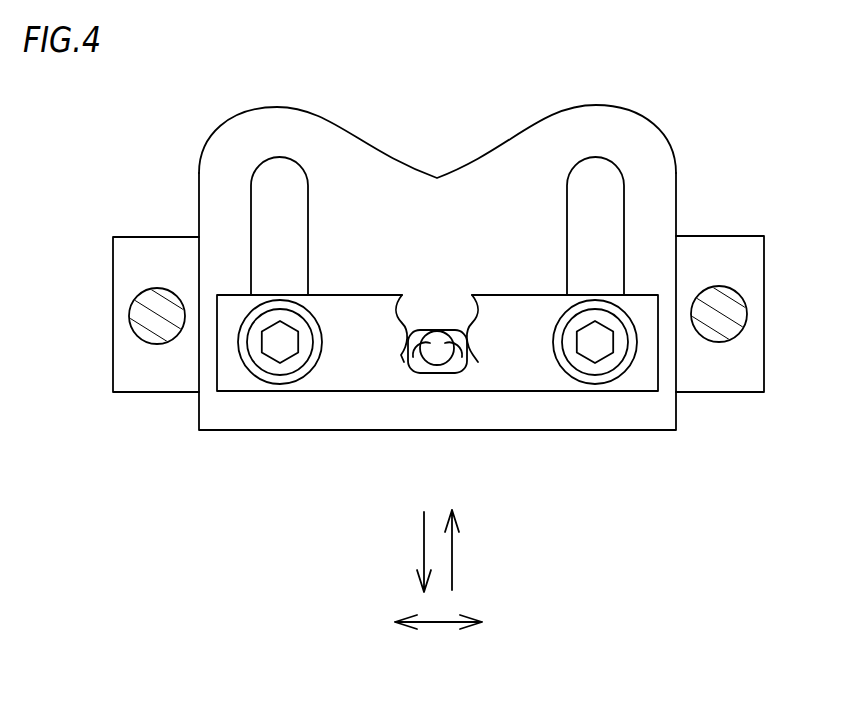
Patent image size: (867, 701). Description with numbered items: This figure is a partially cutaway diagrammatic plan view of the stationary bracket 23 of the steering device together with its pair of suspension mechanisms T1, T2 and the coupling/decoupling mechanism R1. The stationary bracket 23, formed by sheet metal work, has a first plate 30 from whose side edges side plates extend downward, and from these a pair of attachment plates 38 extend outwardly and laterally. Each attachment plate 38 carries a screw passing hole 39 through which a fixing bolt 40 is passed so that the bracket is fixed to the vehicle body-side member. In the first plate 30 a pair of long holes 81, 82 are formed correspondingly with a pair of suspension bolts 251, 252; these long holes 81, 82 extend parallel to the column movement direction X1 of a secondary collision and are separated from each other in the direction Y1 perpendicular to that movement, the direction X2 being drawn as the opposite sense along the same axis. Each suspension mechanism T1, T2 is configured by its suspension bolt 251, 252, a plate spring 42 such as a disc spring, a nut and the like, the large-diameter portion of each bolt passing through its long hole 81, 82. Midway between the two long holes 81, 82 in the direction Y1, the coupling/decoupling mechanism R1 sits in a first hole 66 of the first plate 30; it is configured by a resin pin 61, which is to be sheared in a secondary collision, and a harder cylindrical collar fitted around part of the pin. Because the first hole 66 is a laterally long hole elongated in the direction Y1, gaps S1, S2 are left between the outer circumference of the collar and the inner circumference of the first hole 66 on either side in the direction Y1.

The stationary bracket 23 is at (677, 206).
The first plate 30 is at (422, 190).
The long hole 81 is at (280, 172).
The long hole 82 is at (595, 172).
The attachment plate 38 is at (127, 267).
The screw passing hole 39 is at (131, 318).
The fixing bolt 40 is at (155, 330).
The plate spring 42 is at (253, 368).
The suspension bolt 251 is at (269, 377).
The suspension bolt 252 is at (605, 377).
The suspension mechanism T1 is at (307, 383).
The suspension mechanism T2 is at (568, 383).
The gap S1 is at (420, 330).
The gap S2 is at (455, 330).
The resin pin 61 is at (418, 352).
The coupling/decoupling mechanism R1 is at (436, 366).
The first hole 66 is at (445, 358).
The column movement direction X1 is at (452, 566).
The X2 direction X2 is at (424, 548).
The direction perpendicular to the column movement direction Y1 is at (437, 625).